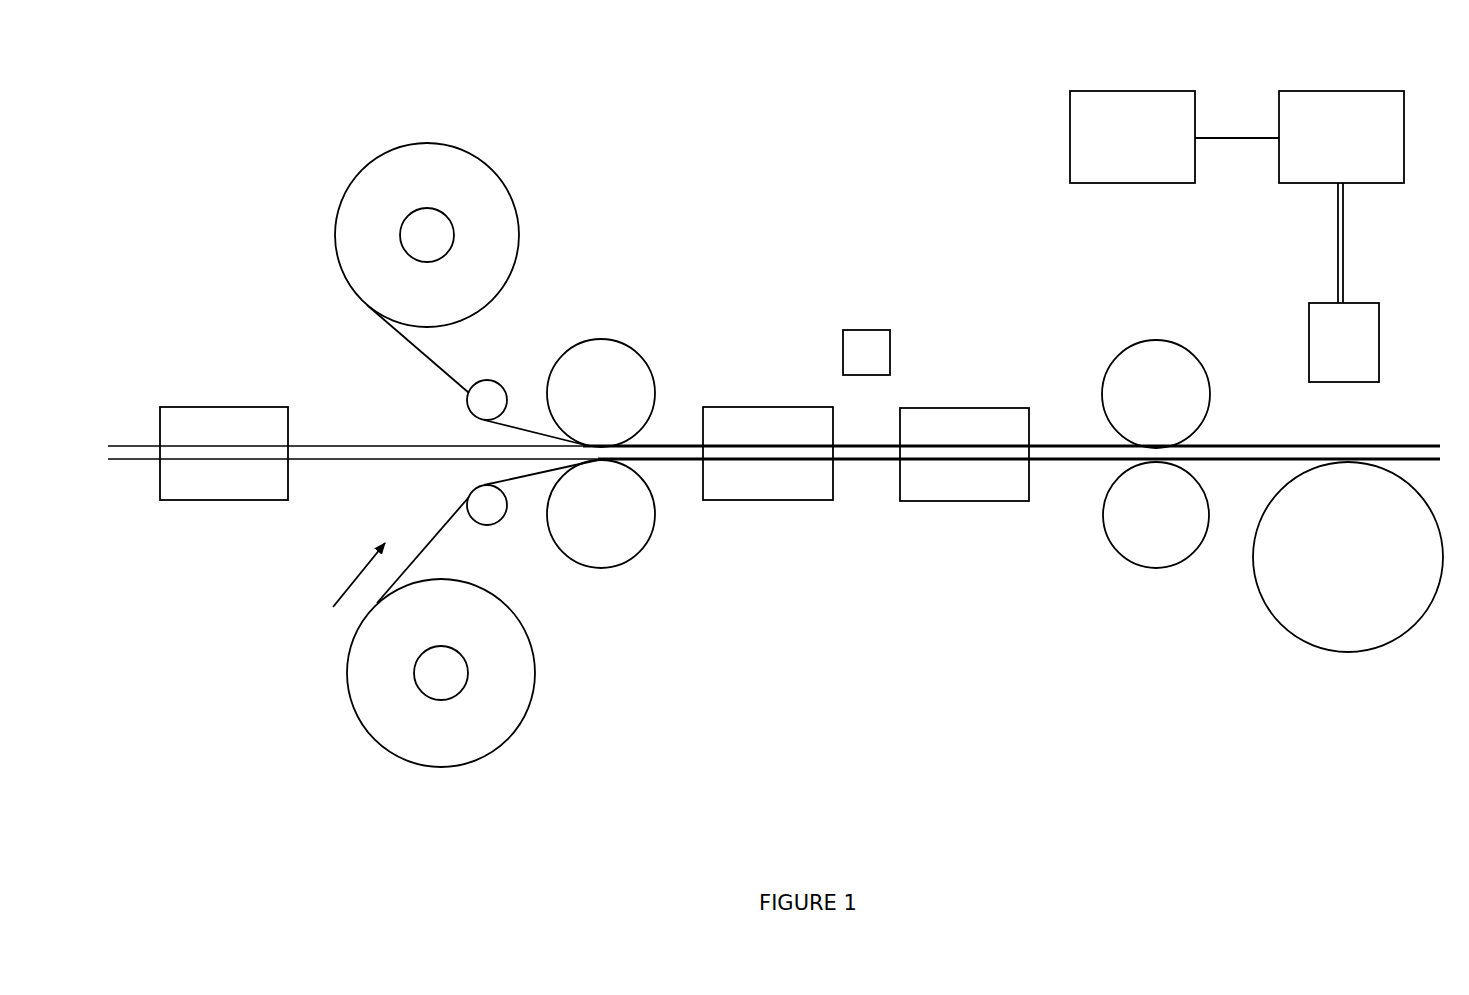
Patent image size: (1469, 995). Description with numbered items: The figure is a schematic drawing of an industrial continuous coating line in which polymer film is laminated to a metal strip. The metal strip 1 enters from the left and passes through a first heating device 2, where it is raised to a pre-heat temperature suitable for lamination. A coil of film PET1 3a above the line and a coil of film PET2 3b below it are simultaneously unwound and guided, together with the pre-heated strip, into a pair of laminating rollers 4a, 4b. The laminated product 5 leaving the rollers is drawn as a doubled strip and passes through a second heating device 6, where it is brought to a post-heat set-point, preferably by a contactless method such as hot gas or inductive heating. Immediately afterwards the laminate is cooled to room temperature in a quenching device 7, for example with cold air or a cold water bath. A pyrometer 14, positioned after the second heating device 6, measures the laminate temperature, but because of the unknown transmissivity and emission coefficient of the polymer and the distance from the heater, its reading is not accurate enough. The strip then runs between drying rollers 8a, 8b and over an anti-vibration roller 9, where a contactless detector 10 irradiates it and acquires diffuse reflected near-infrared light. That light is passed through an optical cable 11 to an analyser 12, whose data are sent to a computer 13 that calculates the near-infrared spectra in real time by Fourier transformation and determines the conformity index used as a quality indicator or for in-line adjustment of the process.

The metal strip 1 is at (122, 443).
The first heating device 2 is at (202, 407).
The coil of film PET1 3a is at (438, 288).
The coil of film PET2 3b is at (446, 618).
The laminating roller 4a is at (601, 370).
The laminating roller 4b is at (601, 537).
The laminated product 5 is at (672, 441).
The second heating device 6 is at (768, 405).
The quenching device 7 is at (962, 406).
The drying roller 8a is at (1156, 366).
The drying roller 8b is at (1156, 537).
The anti-vibration roller 9 is at (1347, 654).
The contactless detector 10 is at (1370, 342).
The optical cable 11 is at (1367, 243).
The analyser 12 is at (1329, 137).
The computer 13 is at (1132, 160).
The pyrometer 14 is at (865, 438).